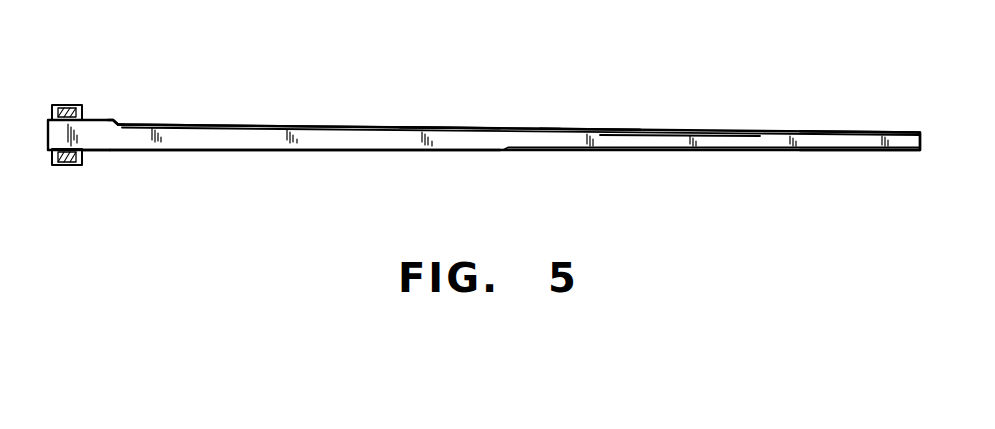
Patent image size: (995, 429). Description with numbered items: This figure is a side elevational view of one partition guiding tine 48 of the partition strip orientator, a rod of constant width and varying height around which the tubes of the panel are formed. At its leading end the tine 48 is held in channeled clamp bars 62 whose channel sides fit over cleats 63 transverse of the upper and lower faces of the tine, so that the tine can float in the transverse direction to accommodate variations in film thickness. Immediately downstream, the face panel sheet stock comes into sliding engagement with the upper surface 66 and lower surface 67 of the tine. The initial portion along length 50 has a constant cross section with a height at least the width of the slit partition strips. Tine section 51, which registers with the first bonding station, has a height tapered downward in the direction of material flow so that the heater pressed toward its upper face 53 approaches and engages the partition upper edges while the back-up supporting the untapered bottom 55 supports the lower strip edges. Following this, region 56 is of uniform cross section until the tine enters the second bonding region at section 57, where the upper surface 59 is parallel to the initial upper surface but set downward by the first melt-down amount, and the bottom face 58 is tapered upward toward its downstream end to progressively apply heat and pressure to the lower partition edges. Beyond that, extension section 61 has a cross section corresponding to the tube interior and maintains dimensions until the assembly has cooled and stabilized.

The tine 48 is at (340, 146).
The initial portion length 50 is at (90, 130).
The tine section 51 is at (236, 129).
The upper face 53 is at (198, 123).
The untapered bottom 55 is at (243, 151).
The uniform cross section region 56 is at (457, 128).
The second bonding region section 57 is at (652, 142).
The bottom face 58 is at (625, 153).
The upper surface 59 is at (580, 130).
The extension section 61 is at (845, 140).
The channeled clamp bar 62 is at (73, 103).
The cleat 63 is at (63, 104).
The upper surface 66 is at (103, 120).
The lower surface 67 is at (94, 152).